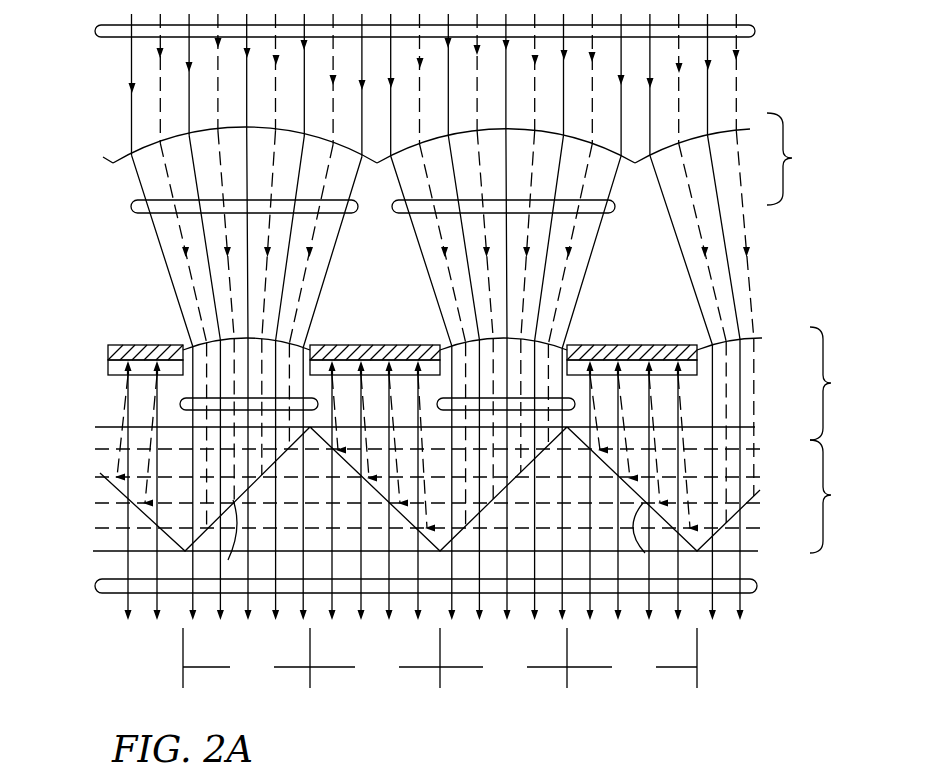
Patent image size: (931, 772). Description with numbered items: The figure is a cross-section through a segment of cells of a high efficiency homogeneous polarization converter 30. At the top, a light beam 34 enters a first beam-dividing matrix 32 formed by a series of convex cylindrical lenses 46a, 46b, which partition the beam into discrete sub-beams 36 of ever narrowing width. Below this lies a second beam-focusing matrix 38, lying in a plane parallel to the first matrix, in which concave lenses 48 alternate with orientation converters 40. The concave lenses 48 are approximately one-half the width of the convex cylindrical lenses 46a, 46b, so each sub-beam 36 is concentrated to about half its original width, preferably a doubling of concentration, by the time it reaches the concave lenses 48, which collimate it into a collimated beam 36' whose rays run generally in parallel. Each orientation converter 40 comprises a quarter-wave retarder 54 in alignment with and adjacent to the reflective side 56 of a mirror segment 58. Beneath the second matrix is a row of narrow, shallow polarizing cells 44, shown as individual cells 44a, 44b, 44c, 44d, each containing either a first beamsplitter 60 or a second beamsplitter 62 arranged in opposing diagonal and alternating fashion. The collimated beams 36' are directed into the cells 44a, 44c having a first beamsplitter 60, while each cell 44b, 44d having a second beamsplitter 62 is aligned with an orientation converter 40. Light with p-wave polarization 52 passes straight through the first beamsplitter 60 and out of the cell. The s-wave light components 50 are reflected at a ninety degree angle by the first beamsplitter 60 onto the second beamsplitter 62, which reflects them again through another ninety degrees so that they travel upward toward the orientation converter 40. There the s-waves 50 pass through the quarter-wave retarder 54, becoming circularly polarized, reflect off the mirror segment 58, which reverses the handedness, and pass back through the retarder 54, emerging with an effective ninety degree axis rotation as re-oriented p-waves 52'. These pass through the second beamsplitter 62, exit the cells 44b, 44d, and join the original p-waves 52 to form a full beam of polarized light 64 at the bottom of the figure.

The high efficiency homogeneous polarization converter 30 is at (766, 645).
The first beam-dividing matrix 32 is at (798, 159).
The light beam 34 is at (95, 31).
The sub-beams 36 is at (326, 220).
The collimated beams 36' is at (306, 415).
The second beam-focusing matrix 38 is at (841, 383).
The orientation converters 40 is at (700, 370).
The polarizing cells 44 is at (483, 490).
The polarizing cell 44a is at (246, 658).
The polarizing cell 44b is at (375, 658).
The polarizing cell 44c is at (503, 658).
The polarizing cell 44d is at (632, 658).
The convex cylindrical lens 46a is at (150, 148).
The convex cylindrical lens 46b is at (593, 140).
The concave lenses 48 is at (208, 345).
The s-wave light components 50 is at (205, 457).
The p-wave 52 is at (367, 453).
The re-oriented p-waves 52' is at (341, 530).
The quarter-wave retarders 54 is at (120, 376).
The reflective sides 56 is at (110, 366).
The mirror segments 58 is at (140, 346).
The first beamsplitter 60 is at (232, 552).
The second beamsplitter 62 is at (645, 553).
The full beam of polarized light 64 is at (97, 592).